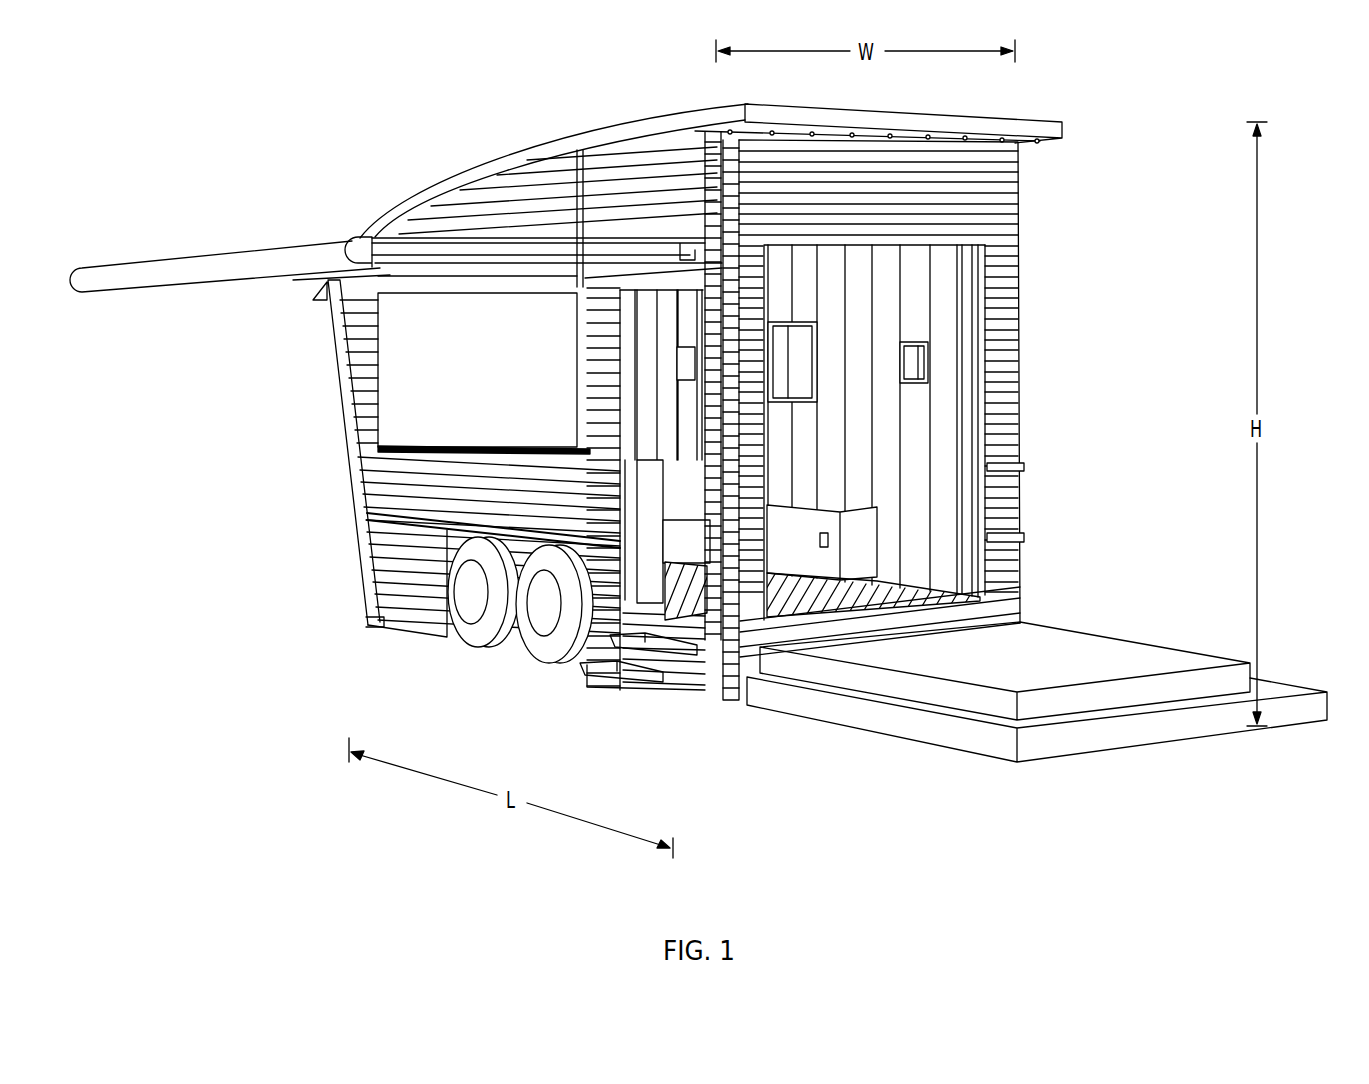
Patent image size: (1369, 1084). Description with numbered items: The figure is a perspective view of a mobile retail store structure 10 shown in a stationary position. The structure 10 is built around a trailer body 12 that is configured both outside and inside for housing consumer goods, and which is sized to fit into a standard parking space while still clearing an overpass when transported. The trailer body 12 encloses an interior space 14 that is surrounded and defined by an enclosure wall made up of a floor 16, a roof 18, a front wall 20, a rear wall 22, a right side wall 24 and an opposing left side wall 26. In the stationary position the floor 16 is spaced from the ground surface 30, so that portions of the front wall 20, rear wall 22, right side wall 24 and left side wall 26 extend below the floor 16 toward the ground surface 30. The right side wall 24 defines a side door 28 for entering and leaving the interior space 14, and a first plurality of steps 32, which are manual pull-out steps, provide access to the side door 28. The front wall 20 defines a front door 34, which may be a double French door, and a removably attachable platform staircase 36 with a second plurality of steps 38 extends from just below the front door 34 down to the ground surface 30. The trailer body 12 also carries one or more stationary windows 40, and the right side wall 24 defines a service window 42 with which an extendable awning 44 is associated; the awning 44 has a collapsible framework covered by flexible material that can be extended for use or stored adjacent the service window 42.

The mobile retail store structure 10 is at (312, 142).
The trailer body 12 is at (640, 120).
The interior space 14 is at (845, 303).
The floor 16 is at (880, 585).
The roof 18 is at (1020, 128).
The front wall 20 is at (1003, 228).
The rear wall 22 is at (325, 322).
The right side wall 24 is at (392, 482).
The left side wall 26 is at (1025, 421).
The side door 28 is at (718, 542).
The ground surface 30 is at (385, 697).
The first plurality of steps 32 is at (620, 680).
The front door 34 is at (978, 393).
The platform staircase 36 is at (1110, 658).
The second plurality of steps 38 is at (1075, 740).
The stationary windows 40 is at (913, 363).
The service window 42 is at (420, 392).
The awning 44 is at (232, 257).